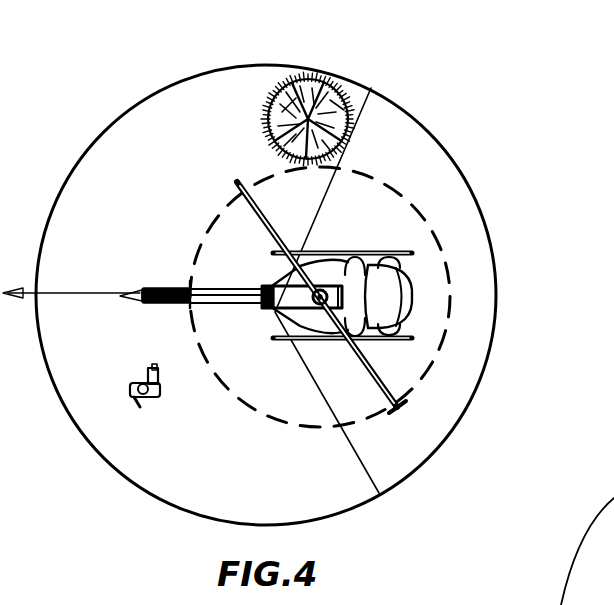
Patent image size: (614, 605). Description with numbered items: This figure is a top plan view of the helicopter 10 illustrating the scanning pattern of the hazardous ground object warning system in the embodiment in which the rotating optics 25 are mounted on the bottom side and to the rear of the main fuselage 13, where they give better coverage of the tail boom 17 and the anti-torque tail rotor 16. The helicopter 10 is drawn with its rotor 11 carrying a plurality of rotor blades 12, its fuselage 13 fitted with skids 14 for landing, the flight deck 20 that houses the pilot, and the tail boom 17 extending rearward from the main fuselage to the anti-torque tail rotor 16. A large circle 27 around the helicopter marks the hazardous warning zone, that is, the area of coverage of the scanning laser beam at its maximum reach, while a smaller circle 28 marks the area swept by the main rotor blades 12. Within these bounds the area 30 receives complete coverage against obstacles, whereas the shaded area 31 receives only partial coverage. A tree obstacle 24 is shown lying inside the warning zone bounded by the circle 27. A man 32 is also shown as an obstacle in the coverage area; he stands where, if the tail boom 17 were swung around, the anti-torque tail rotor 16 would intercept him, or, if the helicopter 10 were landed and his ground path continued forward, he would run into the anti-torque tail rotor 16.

The helicopter 10 is at (413, 235).
The rotor 11 is at (317, 289).
The rotor blades 12 is at (373, 377).
The fuselage 13 is at (306, 322).
The skids 14 is at (387, 252).
The anti-torque tail rotor 16 is at (133, 295).
The tail boom 17 is at (184, 292).
The flight deck 20 is at (296, 297).
The tree obstacle 24 is at (370, 92).
The rotating optics 25 is at (260, 306).
The circle 27 is at (494, 352).
The circle 28 is at (424, 223).
The area 30 is at (463, 224).
The shaded area 31 is at (113, 182).
The man 32 is at (137, 407).